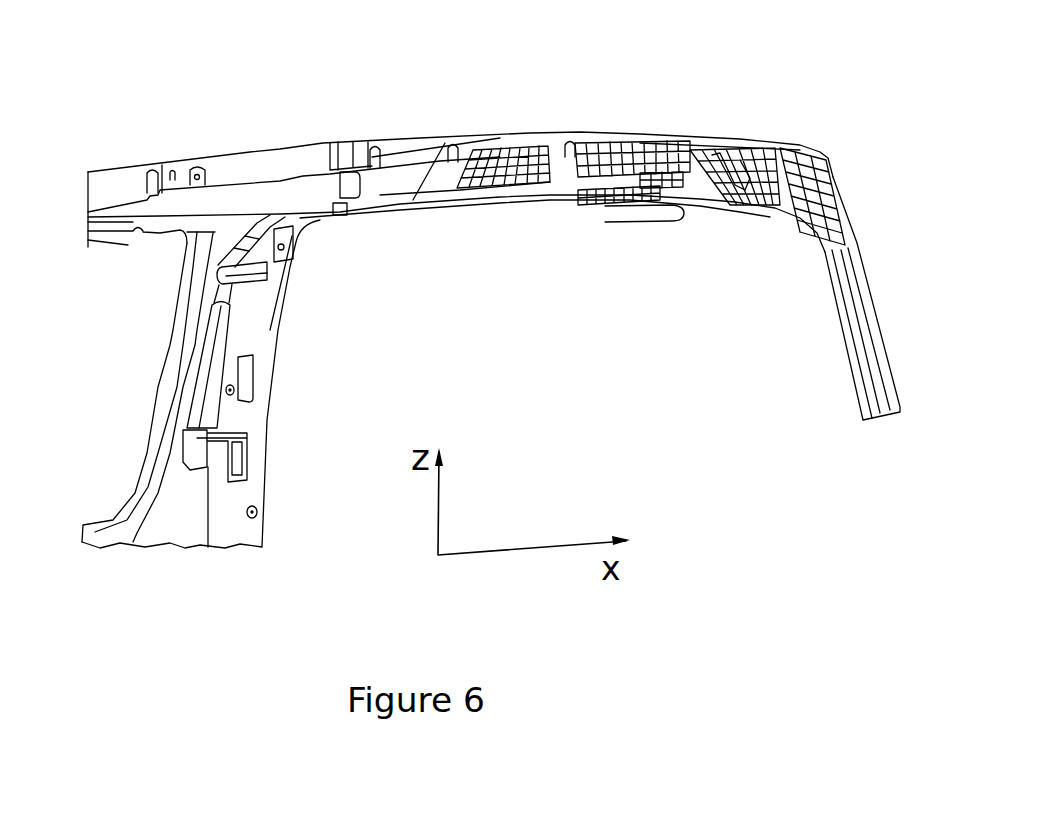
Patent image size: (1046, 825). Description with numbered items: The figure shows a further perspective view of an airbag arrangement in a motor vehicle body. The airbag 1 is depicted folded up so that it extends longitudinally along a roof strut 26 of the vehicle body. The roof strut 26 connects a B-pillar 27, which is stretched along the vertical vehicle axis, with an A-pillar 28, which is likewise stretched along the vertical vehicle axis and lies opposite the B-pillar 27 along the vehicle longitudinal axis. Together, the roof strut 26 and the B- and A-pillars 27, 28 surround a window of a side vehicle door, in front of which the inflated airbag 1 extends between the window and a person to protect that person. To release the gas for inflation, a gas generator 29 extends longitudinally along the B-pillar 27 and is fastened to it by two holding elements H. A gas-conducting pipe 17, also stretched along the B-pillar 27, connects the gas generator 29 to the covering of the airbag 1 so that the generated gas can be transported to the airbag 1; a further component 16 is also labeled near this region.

The airbag 1 is at (283, 200).
The roof strut 26 is at (520, 153).
The mounting plate 16 is at (296, 241).
The gas-conducting pipe 17 is at (258, 245).
The holding elements H is at (273, 278).
The B-pillar 27 is at (245, 337).
The A-pillar 28 is at (857, 296).
The gas generator 29 is at (205, 394).